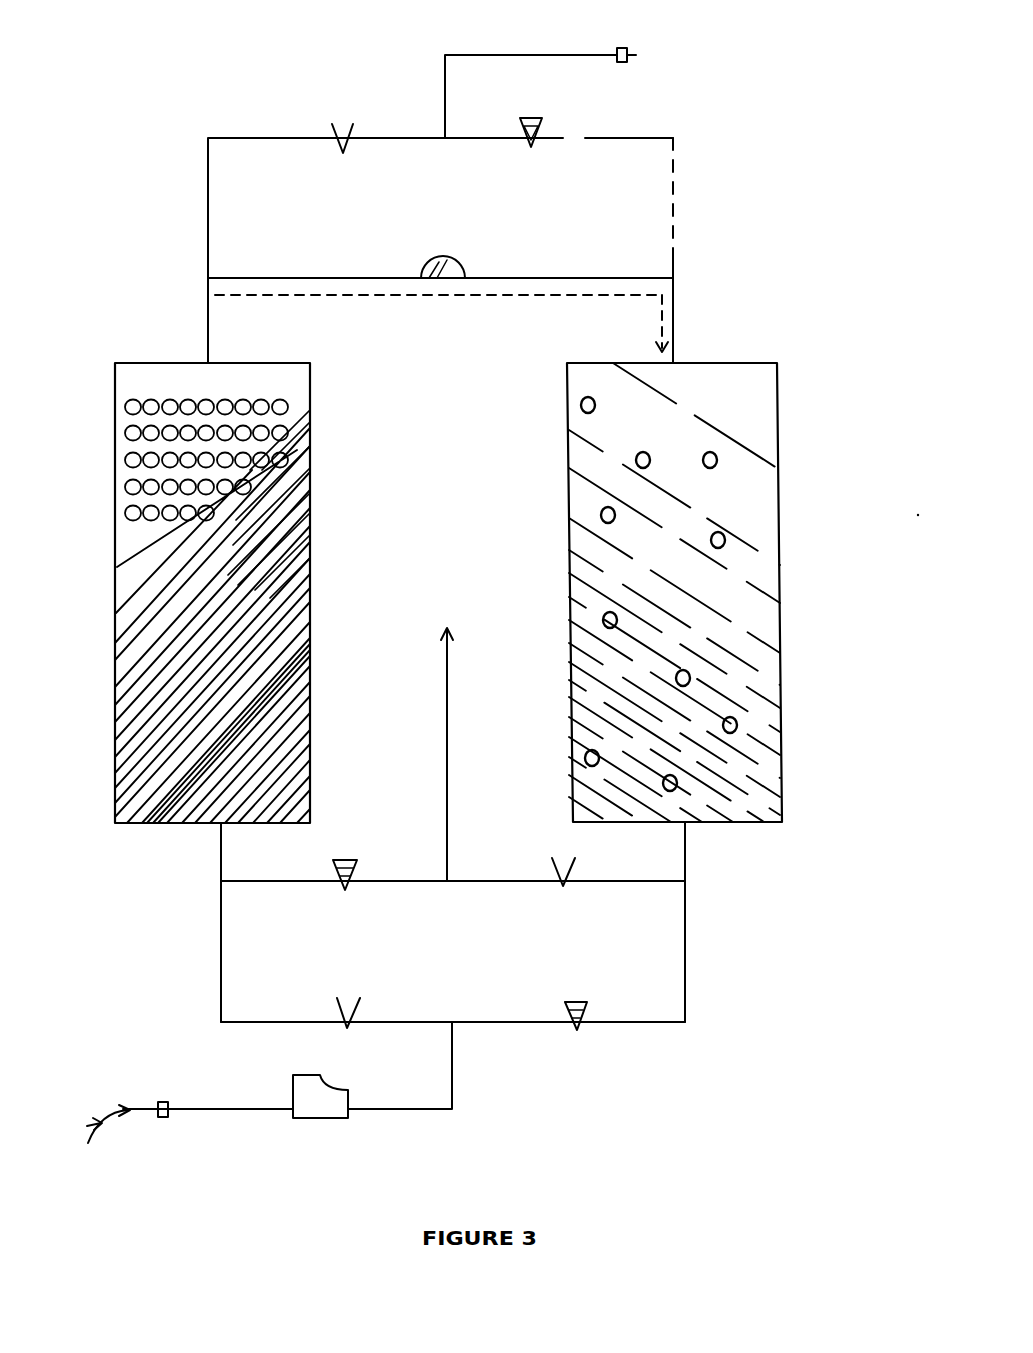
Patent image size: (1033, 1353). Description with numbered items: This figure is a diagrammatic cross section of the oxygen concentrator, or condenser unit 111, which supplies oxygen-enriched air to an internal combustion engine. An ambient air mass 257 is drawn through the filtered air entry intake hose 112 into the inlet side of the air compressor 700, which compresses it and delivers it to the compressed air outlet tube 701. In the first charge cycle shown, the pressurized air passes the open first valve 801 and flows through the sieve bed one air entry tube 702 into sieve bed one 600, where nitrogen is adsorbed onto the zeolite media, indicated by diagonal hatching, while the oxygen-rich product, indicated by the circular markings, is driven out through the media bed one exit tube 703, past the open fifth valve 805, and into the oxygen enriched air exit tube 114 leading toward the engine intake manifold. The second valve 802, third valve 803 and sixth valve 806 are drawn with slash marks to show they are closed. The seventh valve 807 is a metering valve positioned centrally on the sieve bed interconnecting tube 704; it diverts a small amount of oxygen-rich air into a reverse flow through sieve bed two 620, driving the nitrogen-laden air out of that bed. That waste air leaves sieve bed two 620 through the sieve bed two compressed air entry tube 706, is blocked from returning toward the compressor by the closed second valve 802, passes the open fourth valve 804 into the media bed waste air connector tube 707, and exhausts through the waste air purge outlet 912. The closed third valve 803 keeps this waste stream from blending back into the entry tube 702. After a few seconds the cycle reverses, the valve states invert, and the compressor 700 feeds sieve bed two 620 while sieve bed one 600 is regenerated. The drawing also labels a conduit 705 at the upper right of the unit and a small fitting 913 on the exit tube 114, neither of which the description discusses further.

The Condenser unit 111 is at (462, 12).
The filtered air entry intake hose 112 is at (181, 1114).
The oxygen enriched air exit tube 114 is at (532, 60).
The ambient air mass 257 is at (118, 1124).
The Sieve Bed-1 600 is at (235, 606).
The Sieve Bed-2 620 is at (679, 579).
The air compressor 700 is at (285, 1115).
The compressed air outlet tube 701 is at (532, 1006).
The Sieve Bed-1 air entry tube 702 is at (226, 992).
The media bed-1 exit tube 703 is at (222, 237).
The sieve bed interconnecting tube 704 is at (278, 265).
The right upper conduit 705 is at (668, 183).
The Sieve Bed-2 compressed air entry tube 706 is at (680, 962).
The media bed waste air connector tube 707 is at (498, 893).
The V-1 valve 801 is at (337, 1007).
The V-2 valve 802 is at (595, 1013).
The V-3 valve 803 is at (335, 883).
The V-4 valve 804 is at (551, 879).
The V-5 valve 805 is at (325, 142).
The V-6 valve 806 is at (517, 137).
The V-7 metering valve 807 is at (449, 259).
The waste air purge outlet 912 is at (464, 729).
The vent valve 913 is at (636, 53).